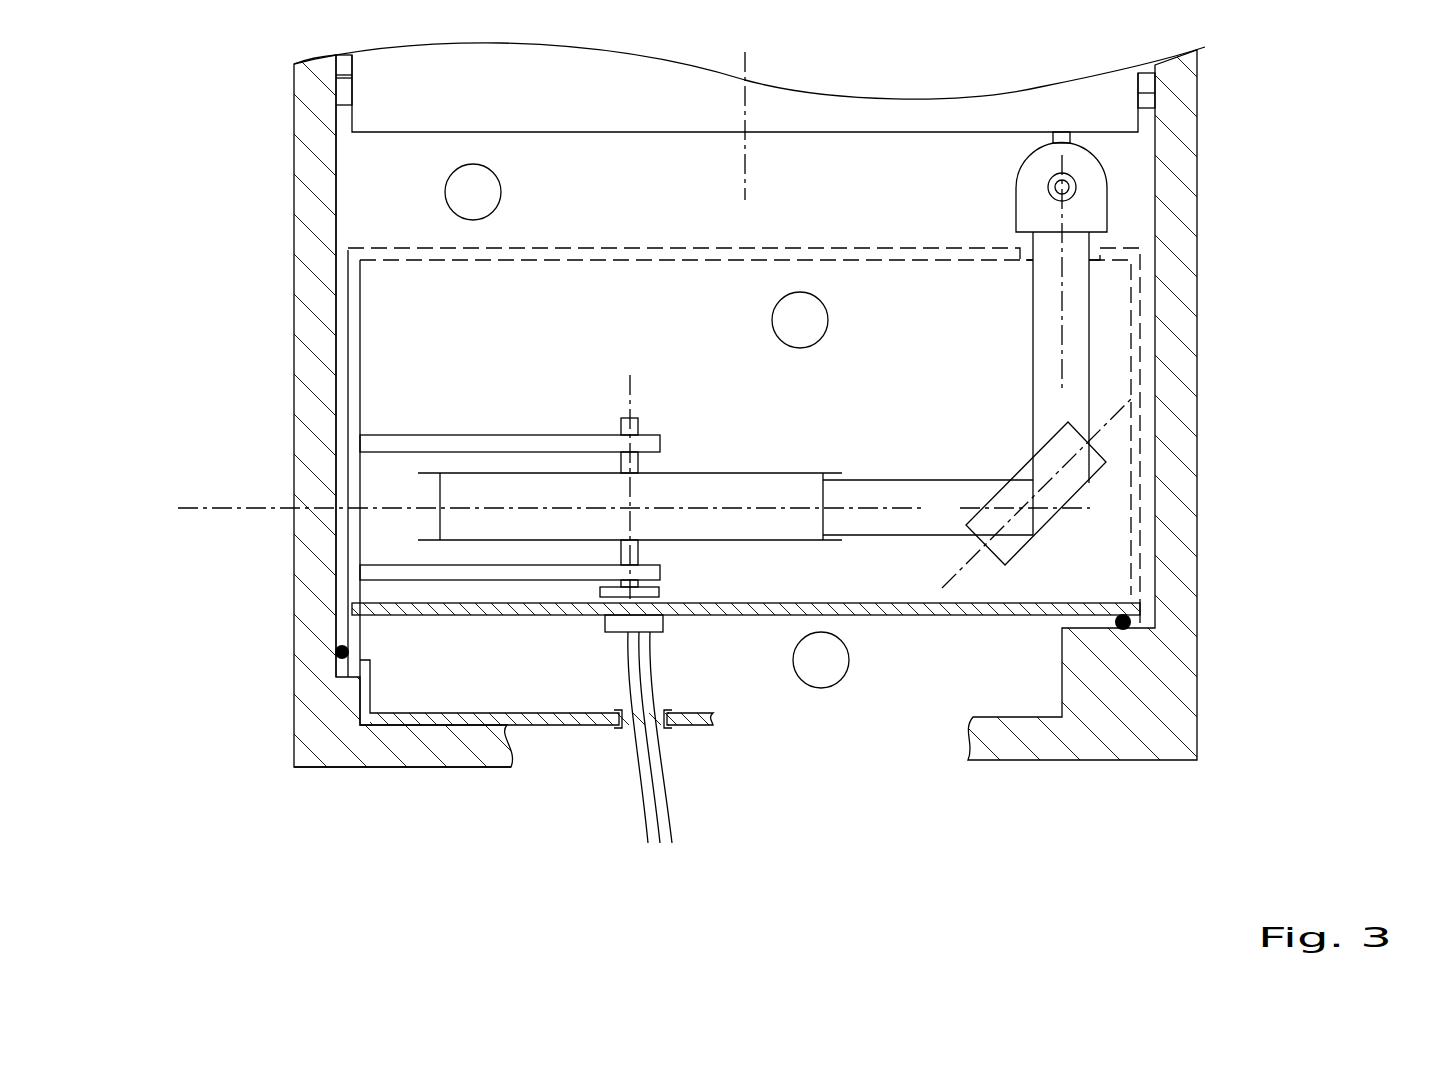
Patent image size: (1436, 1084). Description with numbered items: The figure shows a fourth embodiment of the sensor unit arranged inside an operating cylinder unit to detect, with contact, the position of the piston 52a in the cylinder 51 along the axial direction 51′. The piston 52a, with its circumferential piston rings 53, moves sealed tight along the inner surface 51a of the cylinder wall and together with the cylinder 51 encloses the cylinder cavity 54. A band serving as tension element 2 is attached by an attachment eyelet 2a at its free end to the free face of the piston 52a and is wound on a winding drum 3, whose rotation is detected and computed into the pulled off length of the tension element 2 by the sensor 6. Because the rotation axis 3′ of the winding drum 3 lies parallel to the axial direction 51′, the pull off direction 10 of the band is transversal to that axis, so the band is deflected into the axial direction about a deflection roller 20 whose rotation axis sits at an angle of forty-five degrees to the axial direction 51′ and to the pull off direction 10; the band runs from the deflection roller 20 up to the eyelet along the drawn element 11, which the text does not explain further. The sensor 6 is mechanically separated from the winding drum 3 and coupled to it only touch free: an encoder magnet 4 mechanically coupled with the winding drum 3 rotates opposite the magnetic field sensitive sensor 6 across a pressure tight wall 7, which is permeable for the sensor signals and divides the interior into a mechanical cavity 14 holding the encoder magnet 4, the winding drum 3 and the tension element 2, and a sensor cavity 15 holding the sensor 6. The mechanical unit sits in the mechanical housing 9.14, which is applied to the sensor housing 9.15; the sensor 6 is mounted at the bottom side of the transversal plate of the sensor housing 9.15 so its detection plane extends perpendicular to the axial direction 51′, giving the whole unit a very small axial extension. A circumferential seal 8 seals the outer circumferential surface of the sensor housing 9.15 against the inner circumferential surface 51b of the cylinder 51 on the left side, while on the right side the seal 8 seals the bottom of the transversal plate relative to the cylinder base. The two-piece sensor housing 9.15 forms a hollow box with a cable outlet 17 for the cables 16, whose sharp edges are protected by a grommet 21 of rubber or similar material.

The cylinder 51 is at (310, 325).
The inner surface of the cylinder wall 51a is at (437, 758).
The inner circumferential surface of the cylinder wall 51b is at (338, 416).
The axial direction 51′ is at (745, 117).
The piston 52a is at (749, 88).
The piston rings 53 is at (1143, 93).
The cylinder cavity 54 is at (473, 192).
The mechanical cavity 14 is at (800, 320).
The sensor cavity 15 is at (821, 660).
The tension element 2 is at (655, 371).
The attachment eyelet 2a is at (1052, 185).
The shaft 11 is at (1058, 300).
The pull off direction 10 is at (887, 505).
The winding drum 3 is at (630, 506).
The rotation axis of the winding drum 3′ is at (633, 393).
The deflection roller 20 is at (1018, 553).
The mechanical housing 9.14 is at (417, 262).
The sensor housing 9.15 is at (452, 610).
The encoder magnet 4 is at (612, 592).
The sensor 6 is at (660, 625).
The pressure tight wall 7 is at (645, 612).
The circumferential seal 8 is at (338, 652).
The cables 16 is at (657, 803).
The cable outlet 17 is at (632, 718).
The grommet 21 is at (618, 728).